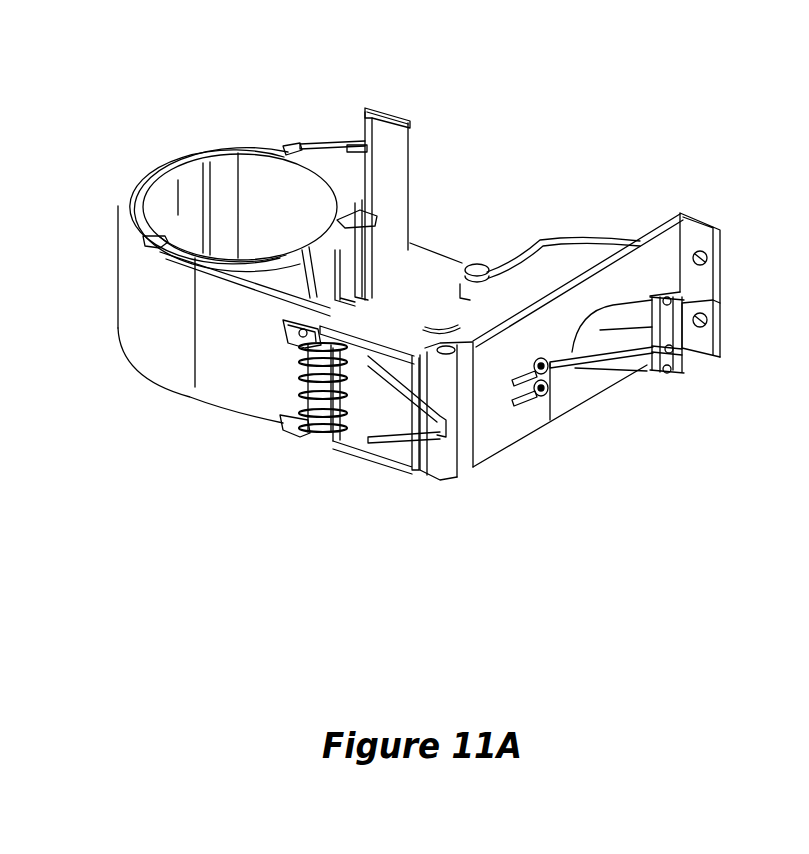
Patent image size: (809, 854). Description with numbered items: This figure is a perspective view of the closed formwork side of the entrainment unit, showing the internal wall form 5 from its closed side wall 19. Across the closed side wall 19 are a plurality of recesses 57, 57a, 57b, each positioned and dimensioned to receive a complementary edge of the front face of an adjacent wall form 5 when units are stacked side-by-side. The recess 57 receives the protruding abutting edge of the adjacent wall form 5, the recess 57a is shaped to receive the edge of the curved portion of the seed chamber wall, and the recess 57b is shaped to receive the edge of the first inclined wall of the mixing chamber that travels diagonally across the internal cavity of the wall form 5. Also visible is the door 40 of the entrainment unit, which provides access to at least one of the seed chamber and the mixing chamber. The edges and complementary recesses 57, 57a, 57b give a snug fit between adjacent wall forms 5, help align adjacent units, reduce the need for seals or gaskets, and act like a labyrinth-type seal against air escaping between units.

The wall form 5 is at (664, 143).
The closed side wall 19 is at (423, 263).
The door 40 is at (368, 412).
The recess 57 is at (140, 170).
The recess 57a is at (560, 243).
The recess 57b is at (376, 237).